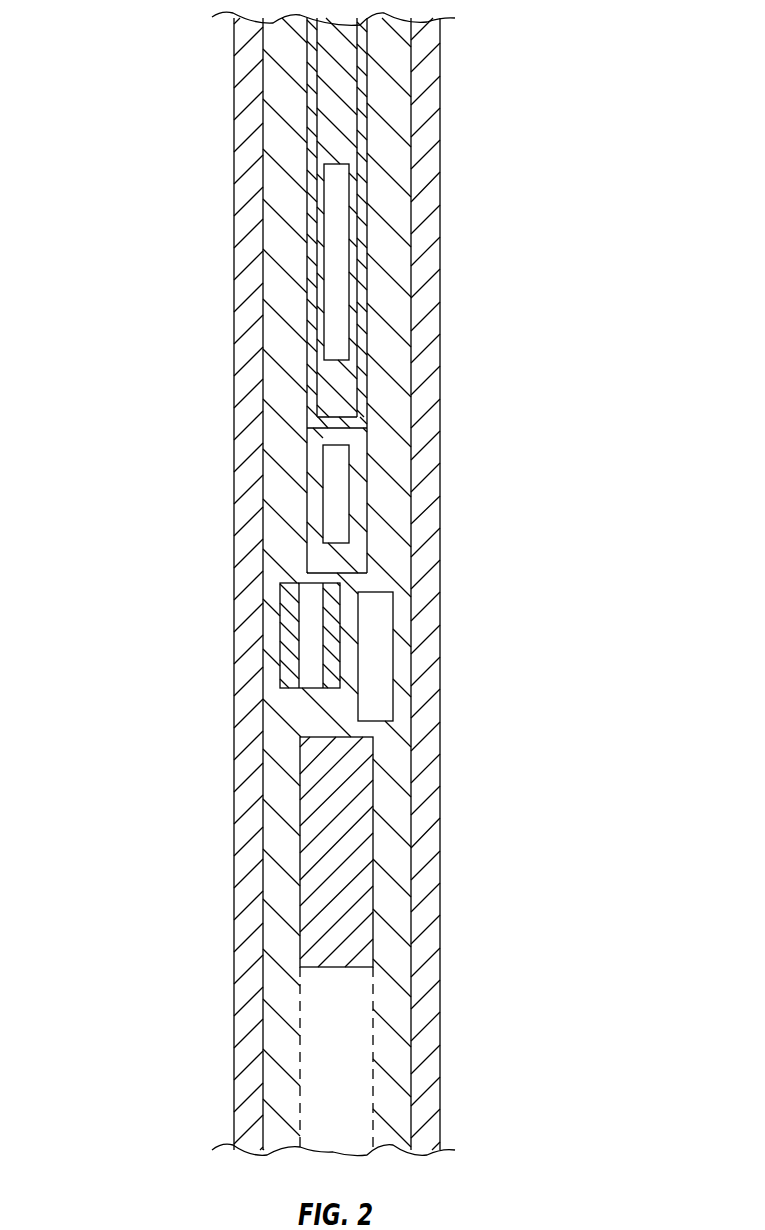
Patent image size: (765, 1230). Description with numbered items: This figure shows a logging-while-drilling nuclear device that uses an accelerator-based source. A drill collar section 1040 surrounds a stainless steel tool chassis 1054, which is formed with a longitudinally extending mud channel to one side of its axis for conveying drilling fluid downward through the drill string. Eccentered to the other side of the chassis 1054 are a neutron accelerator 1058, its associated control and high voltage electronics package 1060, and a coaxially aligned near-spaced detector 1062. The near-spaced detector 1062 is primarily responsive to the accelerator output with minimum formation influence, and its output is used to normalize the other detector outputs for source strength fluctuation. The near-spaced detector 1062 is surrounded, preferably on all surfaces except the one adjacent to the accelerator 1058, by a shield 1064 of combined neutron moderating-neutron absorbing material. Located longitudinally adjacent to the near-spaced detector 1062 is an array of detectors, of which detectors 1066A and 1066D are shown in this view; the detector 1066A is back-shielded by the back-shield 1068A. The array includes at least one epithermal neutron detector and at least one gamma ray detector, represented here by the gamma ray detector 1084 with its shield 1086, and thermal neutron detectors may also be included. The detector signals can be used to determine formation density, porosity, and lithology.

The drill collar section 1040 is at (247, 221).
The stainless steel tool chassis 1054 is at (383, 405).
The control and high voltage electronics package 1060 is at (337, 77).
The neutron accelerator 1058 is at (337, 296).
The shield 1064 is at (362, 507).
The near-spaced detector 1062 is at (332, 474).
The back-shield 1068A is at (290, 598).
The detector 1066A is at (313, 672).
The detector 1066D is at (373, 662).
The shield 1086 is at (330, 892).
The gamma ray detector 1084 is at (298, 1023).